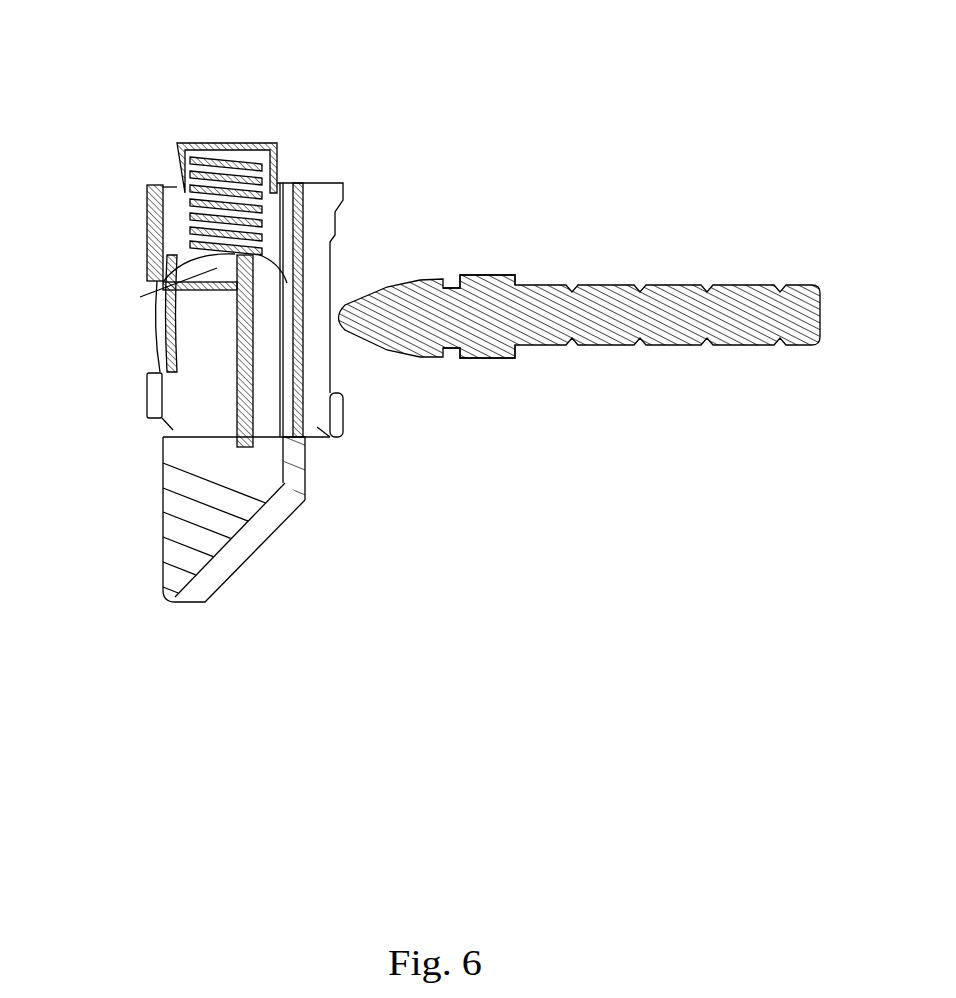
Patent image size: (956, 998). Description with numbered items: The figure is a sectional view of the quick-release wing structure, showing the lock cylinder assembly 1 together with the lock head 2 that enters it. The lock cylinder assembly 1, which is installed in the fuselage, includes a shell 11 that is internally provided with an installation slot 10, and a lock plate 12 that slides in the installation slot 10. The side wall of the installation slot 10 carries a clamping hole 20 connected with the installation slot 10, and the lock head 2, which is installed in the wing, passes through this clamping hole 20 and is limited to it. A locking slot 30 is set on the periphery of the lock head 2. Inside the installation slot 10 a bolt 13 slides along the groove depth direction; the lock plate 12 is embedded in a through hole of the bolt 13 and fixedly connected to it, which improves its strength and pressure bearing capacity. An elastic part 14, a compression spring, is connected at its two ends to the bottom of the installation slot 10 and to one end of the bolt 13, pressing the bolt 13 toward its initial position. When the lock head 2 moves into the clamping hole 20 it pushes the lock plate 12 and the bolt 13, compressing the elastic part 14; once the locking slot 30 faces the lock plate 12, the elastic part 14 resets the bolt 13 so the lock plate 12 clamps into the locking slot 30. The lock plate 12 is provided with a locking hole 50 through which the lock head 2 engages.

The lock cylinder assembly 1 is at (380, 82).
The lock head 2 is at (643, 340).
The installation slot 10 is at (165, 210).
The shell 11 is at (310, 240).
The lock plate 12 is at (240, 288).
The bolt 13 is at (218, 535).
The elastic part 14 is at (235, 215).
The clamping hole 20 is at (307, 337).
The locking slot 30 is at (457, 350).
The locking hole 50 is at (248, 358).